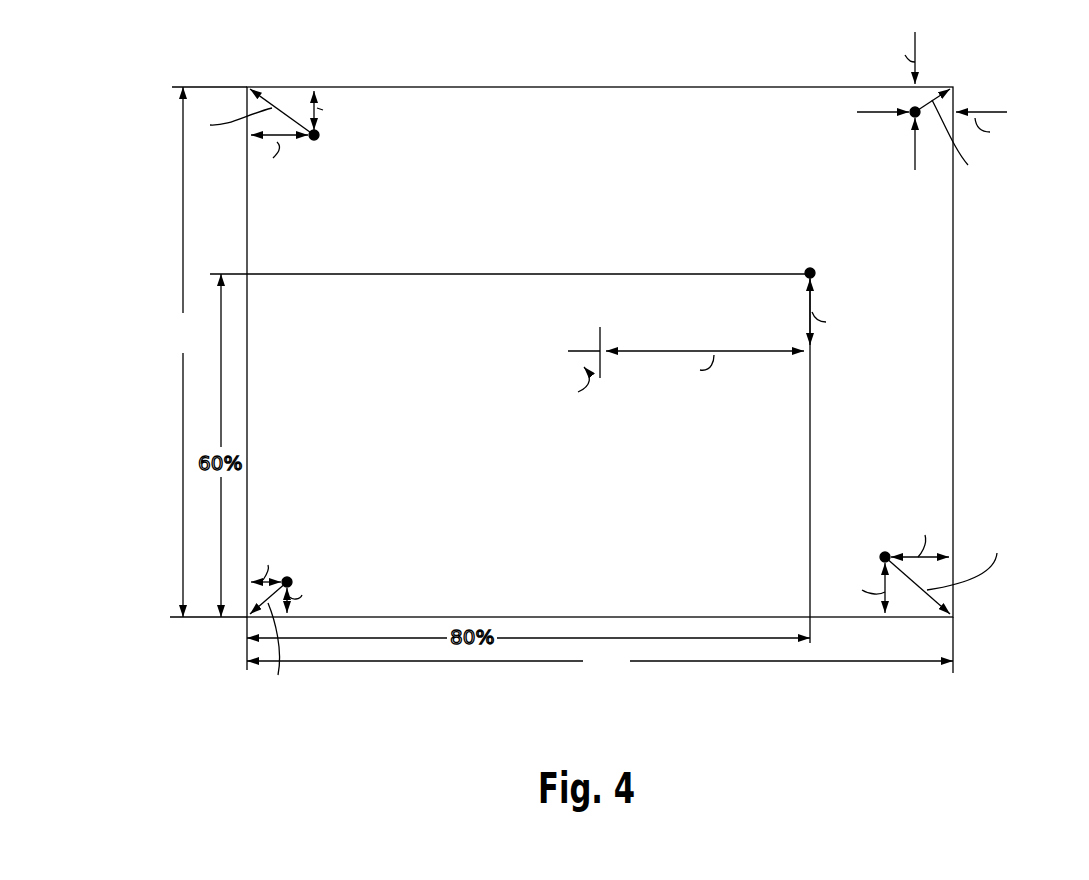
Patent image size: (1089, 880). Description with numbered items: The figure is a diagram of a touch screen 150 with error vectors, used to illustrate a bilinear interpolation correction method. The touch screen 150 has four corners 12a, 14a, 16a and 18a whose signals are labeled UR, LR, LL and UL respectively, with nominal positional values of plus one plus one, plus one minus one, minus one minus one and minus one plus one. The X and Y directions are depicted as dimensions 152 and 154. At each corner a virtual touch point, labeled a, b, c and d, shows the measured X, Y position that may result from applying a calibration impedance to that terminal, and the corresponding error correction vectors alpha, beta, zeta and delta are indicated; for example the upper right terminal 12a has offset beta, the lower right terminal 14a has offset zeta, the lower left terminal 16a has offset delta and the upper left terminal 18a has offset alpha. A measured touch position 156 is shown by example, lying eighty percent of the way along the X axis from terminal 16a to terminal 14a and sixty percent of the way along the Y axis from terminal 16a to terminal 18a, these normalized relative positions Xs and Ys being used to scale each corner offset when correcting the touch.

The touch screen 150 is at (568, 100).
The X dimension 152 is at (600, 661).
The Y dimension 154 is at (184, 352).
The touch position 156 is at (815, 273).
The upper right corner terminal 12a is at (952, 86).
The lower right corner terminal 14a is at (953, 617).
The lower left corner terminal 16a is at (245, 617).
The upper left corner terminal 18a is at (247, 84).